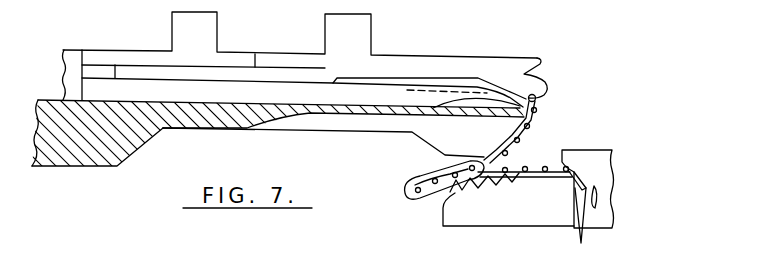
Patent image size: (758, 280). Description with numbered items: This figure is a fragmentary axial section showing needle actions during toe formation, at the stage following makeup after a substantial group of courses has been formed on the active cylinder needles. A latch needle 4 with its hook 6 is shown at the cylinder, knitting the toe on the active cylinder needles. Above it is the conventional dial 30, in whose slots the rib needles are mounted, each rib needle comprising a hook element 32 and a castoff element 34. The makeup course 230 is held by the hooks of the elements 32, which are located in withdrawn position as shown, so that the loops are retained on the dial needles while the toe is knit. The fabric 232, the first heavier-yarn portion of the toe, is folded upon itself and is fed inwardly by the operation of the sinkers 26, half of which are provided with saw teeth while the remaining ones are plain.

The latch needle 4 is at (572, 233).
The hook 6 is at (598, 177).
The sinker 26 is at (476, 217).
The dial 30 is at (315, 123).
The hook element 32 is at (485, 90).
The castoff element 34 is at (539, 63).
The makeup course 230 is at (537, 105).
The fabric 232 is at (406, 191).